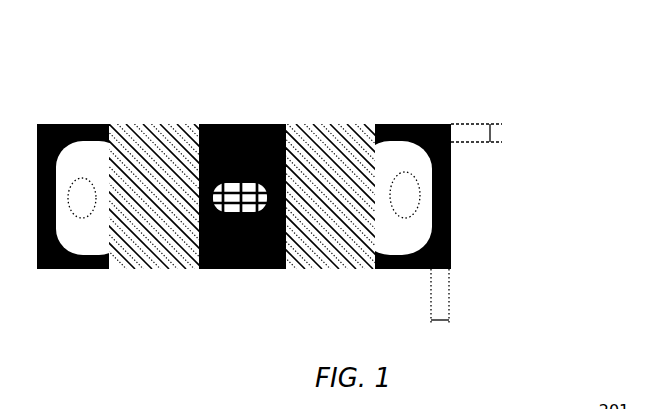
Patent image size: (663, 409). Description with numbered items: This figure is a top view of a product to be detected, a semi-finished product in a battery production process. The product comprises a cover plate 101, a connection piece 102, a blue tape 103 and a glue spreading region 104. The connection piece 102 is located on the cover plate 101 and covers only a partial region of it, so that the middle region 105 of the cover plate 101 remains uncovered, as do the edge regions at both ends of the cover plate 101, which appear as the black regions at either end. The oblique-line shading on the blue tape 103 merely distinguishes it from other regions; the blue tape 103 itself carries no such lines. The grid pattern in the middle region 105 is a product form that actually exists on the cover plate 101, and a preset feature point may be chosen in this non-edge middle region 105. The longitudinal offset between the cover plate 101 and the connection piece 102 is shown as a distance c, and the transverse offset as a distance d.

The cover plate 101 is at (451, 124).
The connection piece 102 is at (90, 238).
The blue tape 103 is at (180, 133).
The glue spreading region 104 is at (80, 198).
The middle region 105 is at (272, 269).
The distance c is at (484, 135).
The distance d is at (440, 308).